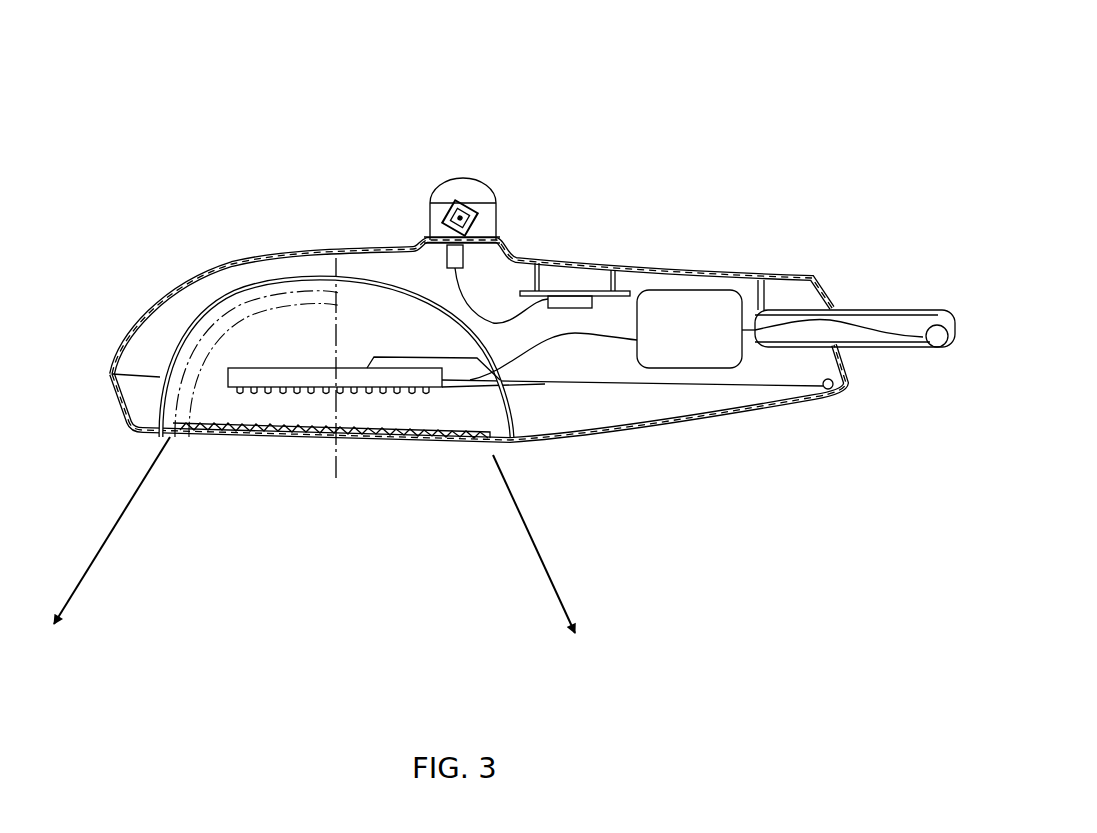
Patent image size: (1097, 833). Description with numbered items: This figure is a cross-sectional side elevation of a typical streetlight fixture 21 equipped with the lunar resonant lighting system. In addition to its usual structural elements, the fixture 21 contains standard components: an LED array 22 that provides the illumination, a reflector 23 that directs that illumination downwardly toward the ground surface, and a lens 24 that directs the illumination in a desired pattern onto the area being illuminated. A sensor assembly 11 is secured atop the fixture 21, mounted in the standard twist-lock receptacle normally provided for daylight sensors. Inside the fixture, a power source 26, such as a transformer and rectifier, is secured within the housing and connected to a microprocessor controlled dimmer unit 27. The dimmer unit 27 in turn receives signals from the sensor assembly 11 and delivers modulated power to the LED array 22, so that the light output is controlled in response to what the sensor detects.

The sensor assembly 11 is at (425, 183).
The streetlight fixture 21 is at (592, 158).
The LED array 22 is at (361, 400).
The reflector 23 is at (308, 278).
The lens 24 is at (300, 437).
The power source 26 is at (675, 355).
The microprocessor controlled dimmer unit 27 is at (578, 306).